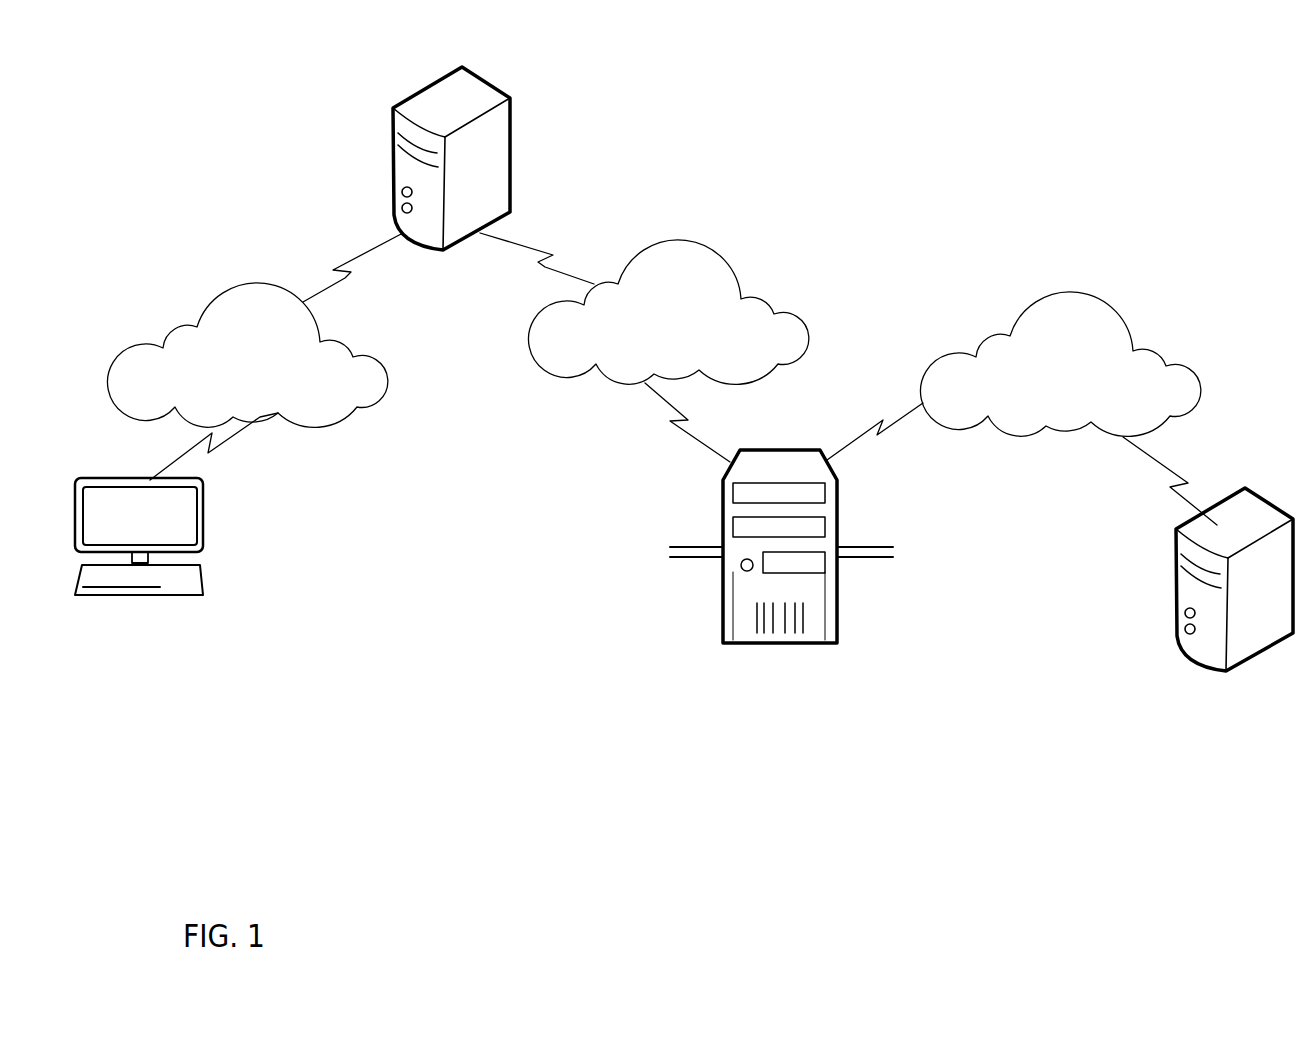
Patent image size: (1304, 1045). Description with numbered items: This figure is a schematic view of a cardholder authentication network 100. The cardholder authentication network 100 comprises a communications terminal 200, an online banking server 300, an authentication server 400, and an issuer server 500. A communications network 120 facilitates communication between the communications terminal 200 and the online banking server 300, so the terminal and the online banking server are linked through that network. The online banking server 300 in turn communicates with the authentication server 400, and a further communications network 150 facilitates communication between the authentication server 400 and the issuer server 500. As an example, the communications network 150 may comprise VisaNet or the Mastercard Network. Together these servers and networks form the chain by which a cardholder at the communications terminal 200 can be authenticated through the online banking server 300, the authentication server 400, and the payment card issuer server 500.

The cardholder authentication network 100 is at (684, 439).
The communications network 120 is at (330, 425).
The communications network 150 is at (1133, 335).
The communications terminal 200 is at (198, 587).
The online banking server 300 is at (490, 82).
The authentication server 400 is at (727, 603).
The issuer server 500 is at (1191, 581).